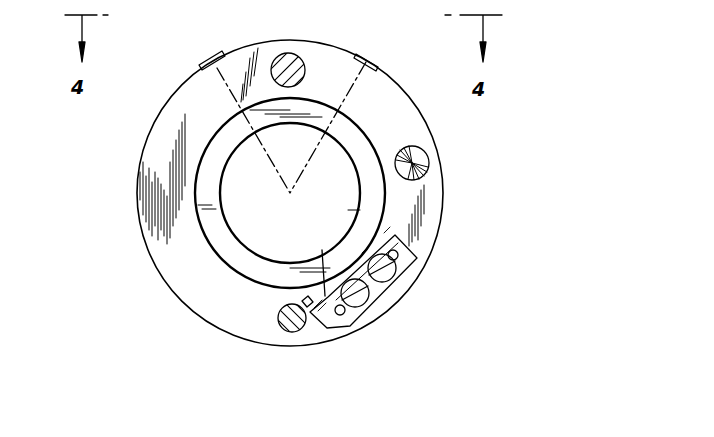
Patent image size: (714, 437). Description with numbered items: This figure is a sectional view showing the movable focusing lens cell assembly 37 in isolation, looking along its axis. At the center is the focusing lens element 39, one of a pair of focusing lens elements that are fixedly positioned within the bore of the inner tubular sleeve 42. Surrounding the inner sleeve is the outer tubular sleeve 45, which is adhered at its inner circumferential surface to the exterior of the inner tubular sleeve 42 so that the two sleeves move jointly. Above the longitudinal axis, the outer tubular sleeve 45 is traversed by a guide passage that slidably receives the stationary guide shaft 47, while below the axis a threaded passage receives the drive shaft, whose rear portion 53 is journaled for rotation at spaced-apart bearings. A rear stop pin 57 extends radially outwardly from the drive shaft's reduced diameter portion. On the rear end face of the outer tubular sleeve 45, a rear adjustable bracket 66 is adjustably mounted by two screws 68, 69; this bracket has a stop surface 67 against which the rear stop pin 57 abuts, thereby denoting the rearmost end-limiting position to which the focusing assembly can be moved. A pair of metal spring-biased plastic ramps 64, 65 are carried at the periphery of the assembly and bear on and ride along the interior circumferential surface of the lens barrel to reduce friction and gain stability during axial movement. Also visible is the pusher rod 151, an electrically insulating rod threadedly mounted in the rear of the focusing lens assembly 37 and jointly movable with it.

The movable focusing lens cell assembly 37 is at (466, 192).
The focusing lens element 39 is at (274, 237).
The inner tubular sleeve 42 is at (370, 215).
The outer tubular sleeve 45 is at (403, 115).
The guide shaft 47 is at (296, 53).
The rear portion of the drive shaft 53 is at (285, 323).
The rear stop pin 57 is at (301, 302).
The spring-biased plastic ramp 64 is at (209, 63).
The spring-biased plastic ramp 65 is at (368, 57).
The rear adjustable bracket 66 is at (423, 262).
The stop surface 67 is at (310, 264).
The screw 68 is at (362, 303).
The screw 69 is at (405, 263).
The pusher rod 151 is at (413, 163).